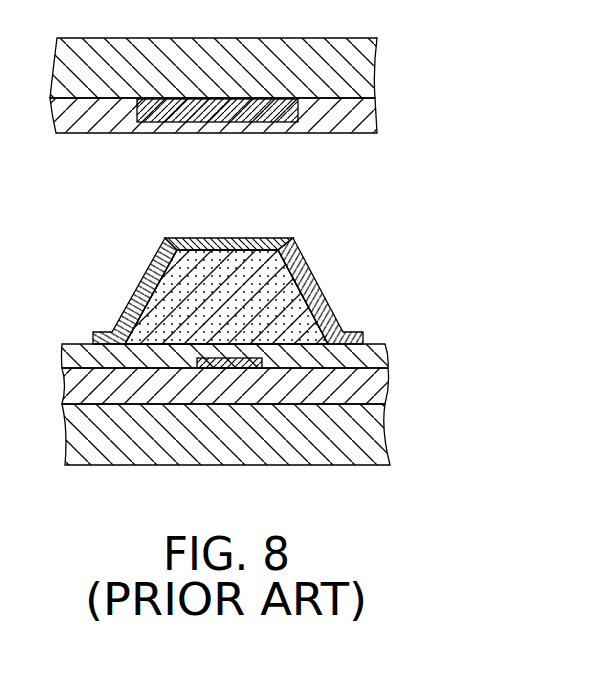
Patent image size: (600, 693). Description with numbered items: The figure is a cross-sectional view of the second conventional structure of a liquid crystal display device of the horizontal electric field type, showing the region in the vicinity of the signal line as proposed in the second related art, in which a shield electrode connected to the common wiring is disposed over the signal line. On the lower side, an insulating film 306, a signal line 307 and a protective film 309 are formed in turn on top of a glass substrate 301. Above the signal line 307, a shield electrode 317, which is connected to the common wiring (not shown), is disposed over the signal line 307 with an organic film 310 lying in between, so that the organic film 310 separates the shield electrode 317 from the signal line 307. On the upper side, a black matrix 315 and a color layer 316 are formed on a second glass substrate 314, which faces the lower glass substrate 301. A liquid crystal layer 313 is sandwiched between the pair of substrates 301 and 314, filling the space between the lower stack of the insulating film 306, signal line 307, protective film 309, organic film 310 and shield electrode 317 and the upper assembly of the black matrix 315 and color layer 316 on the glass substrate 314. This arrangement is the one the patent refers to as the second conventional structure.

The glass substrate 301 is at (375, 437).
The insulating film 306 is at (375, 388).
The signal line 307 is at (147, 282).
The protective film 309 is at (376, 354).
The organic film 310 is at (227, 260).
The liquid crystal layer 313 is at (395, 142).
The glass substrate 314 is at (370, 67).
The black matrix 315 is at (287, 122).
The color layer 316 is at (370, 118).
The shield electrode 317 is at (168, 338).